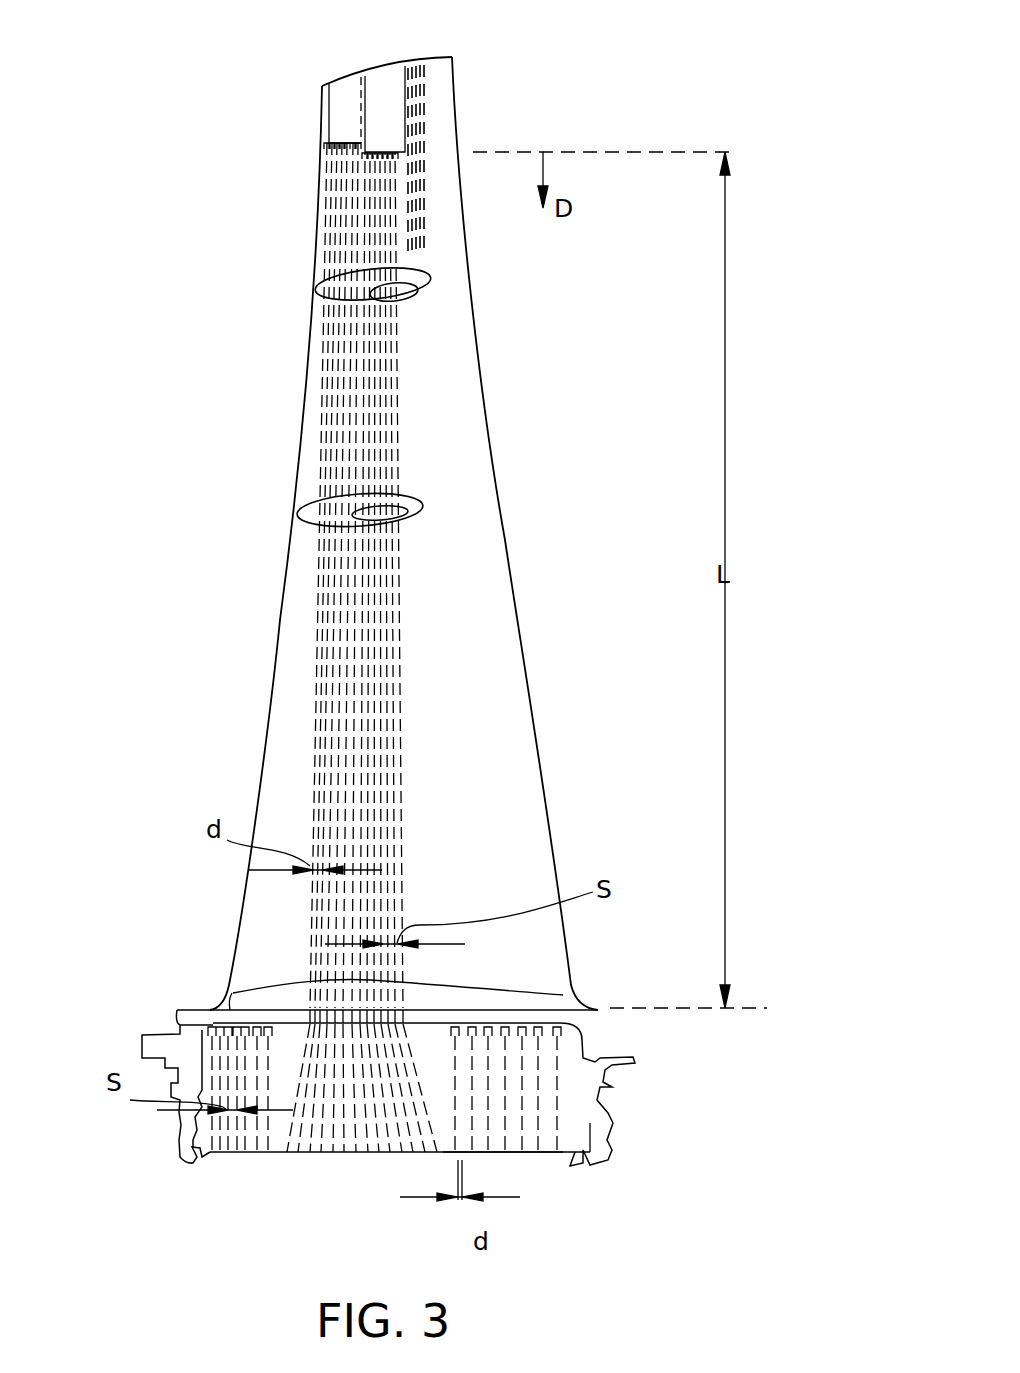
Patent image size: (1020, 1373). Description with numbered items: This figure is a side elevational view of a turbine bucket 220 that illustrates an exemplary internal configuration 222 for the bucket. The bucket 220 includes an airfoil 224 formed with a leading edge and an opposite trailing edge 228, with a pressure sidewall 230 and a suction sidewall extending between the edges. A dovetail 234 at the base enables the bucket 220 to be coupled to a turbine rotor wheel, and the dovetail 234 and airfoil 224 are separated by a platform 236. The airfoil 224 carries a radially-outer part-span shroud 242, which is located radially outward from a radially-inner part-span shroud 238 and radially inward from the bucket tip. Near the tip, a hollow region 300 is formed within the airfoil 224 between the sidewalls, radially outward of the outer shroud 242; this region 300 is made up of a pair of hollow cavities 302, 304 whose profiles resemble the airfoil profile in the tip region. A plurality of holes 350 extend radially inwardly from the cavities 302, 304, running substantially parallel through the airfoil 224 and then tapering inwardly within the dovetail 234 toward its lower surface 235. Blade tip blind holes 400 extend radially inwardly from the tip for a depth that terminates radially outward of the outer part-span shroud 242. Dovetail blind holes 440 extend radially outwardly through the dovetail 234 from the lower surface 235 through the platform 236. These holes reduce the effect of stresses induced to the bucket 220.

The bucket 220 is at (200, 232).
The internal configuration 222 is at (445, 345).
The airfoil 224 is at (483, 790).
The trailing edge 228 is at (478, 359).
The pressure sidewall 230 is at (460, 570).
The dovetail 234 is at (605, 1087).
The lower surface 235 is at (490, 1160).
The platform 236 is at (500, 1010).
The radially-inner part-span shroud 238 is at (410, 503).
The radially-outer part-span shroud 242 is at (432, 283).
The hollow region 300 is at (289, 88).
The hollow cavity 302 is at (340, 108).
The hollow cavity 304 is at (382, 92).
The holes 350 is at (326, 218).
The blade tip blind holes 400 is at (428, 108).
The dovetail blind holes 440 is at (537, 1133).